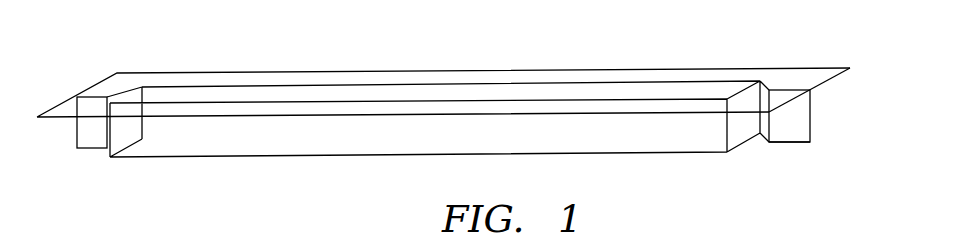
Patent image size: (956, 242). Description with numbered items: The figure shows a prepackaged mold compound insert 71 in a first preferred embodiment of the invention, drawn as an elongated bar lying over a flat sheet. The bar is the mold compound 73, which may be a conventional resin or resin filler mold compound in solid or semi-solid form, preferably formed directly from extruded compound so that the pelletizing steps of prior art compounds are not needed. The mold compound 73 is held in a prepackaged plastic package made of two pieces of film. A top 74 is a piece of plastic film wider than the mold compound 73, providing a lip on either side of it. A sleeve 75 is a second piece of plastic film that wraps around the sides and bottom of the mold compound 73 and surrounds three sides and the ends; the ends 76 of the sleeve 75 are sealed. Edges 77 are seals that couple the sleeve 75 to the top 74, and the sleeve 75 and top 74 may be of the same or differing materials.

The prepackaged mold compound insert 71 is at (229, 56).
The mold compound 73 is at (366, 170).
The top 74 is at (804, 75).
The sleeve 75 is at (788, 152).
The ends 76 is at (812, 117).
The edges 77 is at (89, 127).